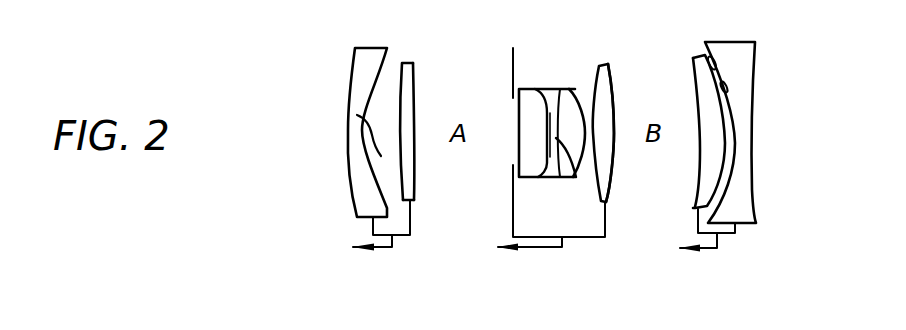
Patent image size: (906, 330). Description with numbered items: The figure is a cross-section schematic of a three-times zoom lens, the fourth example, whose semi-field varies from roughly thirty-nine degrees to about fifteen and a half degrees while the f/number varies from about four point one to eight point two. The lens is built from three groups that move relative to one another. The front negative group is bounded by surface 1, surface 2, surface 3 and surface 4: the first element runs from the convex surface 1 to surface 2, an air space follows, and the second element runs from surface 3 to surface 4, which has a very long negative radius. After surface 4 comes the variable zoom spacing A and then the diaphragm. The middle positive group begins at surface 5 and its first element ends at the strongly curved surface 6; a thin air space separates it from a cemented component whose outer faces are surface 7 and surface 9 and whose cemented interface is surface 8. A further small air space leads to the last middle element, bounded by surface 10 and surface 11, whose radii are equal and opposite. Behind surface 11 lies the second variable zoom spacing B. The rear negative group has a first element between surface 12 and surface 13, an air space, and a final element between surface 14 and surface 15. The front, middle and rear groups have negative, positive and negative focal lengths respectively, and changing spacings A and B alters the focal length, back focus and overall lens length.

The surface 1 is at (351, 96).
The surface 2 is at (374, 145).
The surface 3 is at (400, 107).
The surface 4 is at (416, 115).
The surface 5 is at (518, 125).
The surface 6 is at (551, 163).
The surface 7 is at (543, 111).
The surface 8 is at (577, 178).
The surface 9 is at (582, 98).
The surface 10 is at (595, 110).
The surface 11 is at (611, 110).
The surface 12 is at (696, 83).
The surface 13 is at (710, 63).
The surface 14 is at (726, 86).
The surface 15 is at (754, 82).